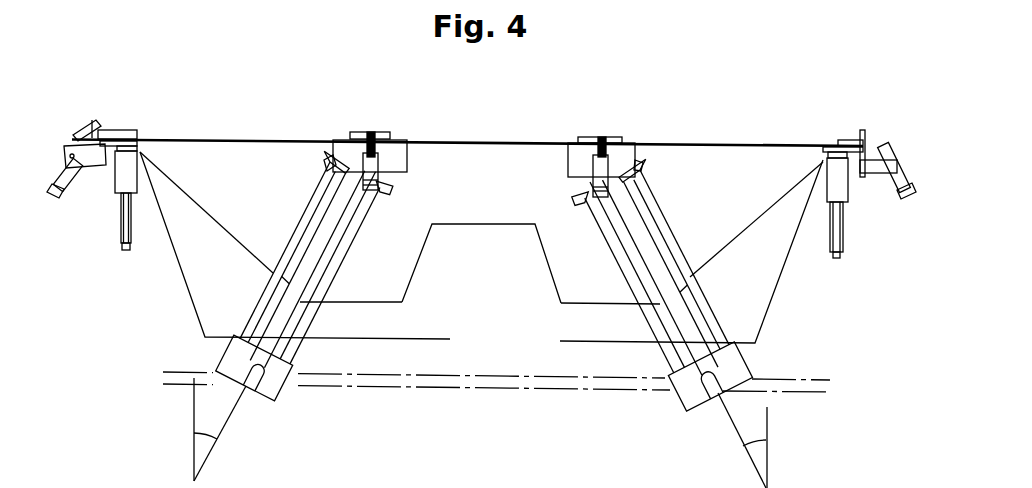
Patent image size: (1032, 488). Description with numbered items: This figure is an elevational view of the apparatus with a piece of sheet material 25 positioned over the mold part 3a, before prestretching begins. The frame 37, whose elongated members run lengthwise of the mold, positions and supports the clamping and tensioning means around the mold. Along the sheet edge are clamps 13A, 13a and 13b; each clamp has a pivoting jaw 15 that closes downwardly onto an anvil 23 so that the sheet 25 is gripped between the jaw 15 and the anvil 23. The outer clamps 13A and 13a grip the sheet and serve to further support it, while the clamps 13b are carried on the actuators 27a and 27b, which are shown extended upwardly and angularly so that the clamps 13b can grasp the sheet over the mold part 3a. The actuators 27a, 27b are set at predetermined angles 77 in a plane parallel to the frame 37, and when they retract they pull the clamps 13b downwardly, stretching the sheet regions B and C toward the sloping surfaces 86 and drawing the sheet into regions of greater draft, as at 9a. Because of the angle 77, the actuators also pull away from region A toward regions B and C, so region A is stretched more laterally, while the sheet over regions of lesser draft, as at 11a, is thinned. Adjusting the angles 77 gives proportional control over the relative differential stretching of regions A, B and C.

The sheet material 25 is at (212, 138).
The mold part 3a is at (755, 312).
The sloping surfaces 86 is at (207, 213).
The region of lesser draft 11a is at (488, 224).
The region of greater draft 9a is at (480, 291).
The actuator 27a is at (273, 340).
The actuator 27b is at (670, 372).
The clamp 13A is at (122, 130).
The clamp 13a is at (880, 142).
The clamp 13b is at (368, 132).
The jaw 15 is at (392, 133).
The anvil 23 is at (398, 153).
The frame 37 is at (810, 394).
The angle 77 is at (222, 436).
The sheet region A is at (484, 138).
The sheet region B is at (243, 140).
The sheet region C is at (713, 147).